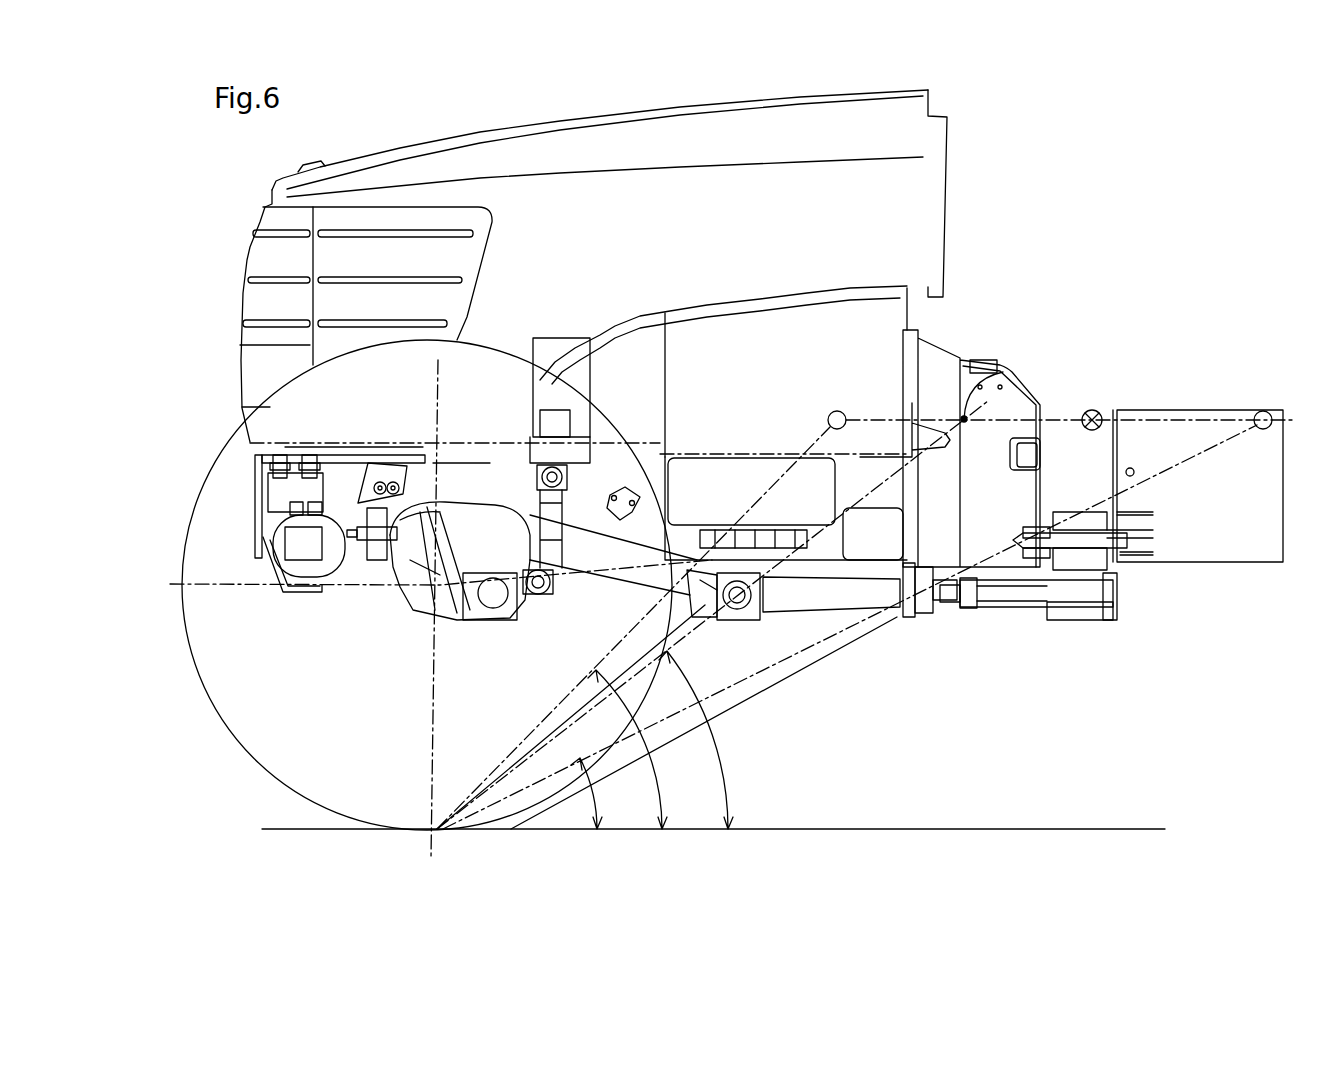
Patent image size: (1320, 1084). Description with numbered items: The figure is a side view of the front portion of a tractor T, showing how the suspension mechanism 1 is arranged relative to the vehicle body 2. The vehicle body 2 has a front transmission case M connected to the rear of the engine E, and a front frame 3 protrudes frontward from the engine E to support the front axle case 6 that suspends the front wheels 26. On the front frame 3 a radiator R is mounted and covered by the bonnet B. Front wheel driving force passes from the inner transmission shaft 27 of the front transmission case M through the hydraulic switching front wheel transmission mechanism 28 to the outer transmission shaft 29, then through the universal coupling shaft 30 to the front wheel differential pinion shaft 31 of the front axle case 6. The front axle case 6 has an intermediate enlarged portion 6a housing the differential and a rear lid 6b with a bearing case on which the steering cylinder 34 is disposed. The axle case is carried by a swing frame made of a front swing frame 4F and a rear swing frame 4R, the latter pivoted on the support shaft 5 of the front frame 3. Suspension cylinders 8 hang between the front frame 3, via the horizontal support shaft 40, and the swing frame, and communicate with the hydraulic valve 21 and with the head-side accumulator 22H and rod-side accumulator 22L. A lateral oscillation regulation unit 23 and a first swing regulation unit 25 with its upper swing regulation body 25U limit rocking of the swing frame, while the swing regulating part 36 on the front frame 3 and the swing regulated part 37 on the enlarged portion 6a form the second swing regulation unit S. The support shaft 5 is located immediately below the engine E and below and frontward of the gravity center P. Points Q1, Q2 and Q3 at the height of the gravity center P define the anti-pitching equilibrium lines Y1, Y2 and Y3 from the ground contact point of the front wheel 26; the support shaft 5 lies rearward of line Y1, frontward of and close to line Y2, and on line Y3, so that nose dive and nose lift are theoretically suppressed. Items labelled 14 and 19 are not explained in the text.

The bonnet B is at (448, 148).
The tractor T is at (1067, 259).
The engine E is at (883, 328).
The suspension mechanism 1 is at (514, 434).
The support bracket 14 is at (494, 454).
The suspension cylinder 8 is at (533, 426).
The first swing regulation unit 25 is at (448, 429).
The upper swing regulation body 25U is at (443, 440).
The second swing regulation unit S is at (487, 467).
The radiator R is at (580, 408).
The bracket 19 is at (647, 464).
The horizontal support shaft 40 is at (537, 435).
The front frame 3 is at (660, 457).
The point Q1 is at (842, 404).
The point Q3 is at (1000, 371).
The gravity center P is at (1091, 408).
The front transmission case M is at (1172, 433).
The point Q2 is at (1270, 405).
The front wheel 26 is at (222, 463).
The hydraulic valve 21 is at (293, 488).
The lateral oscillation regulation unit 23 is at (371, 453).
The rod-side accumulator 22L is at (290, 512).
The head-side accumulator 22H is at (313, 553).
The swing regulating part 36 is at (435, 578).
The swing regulated part 37 is at (433, 612).
The front swing frame 4F is at (381, 584).
The rear lid 6b is at (450, 613).
The intermediate enlarged portion 6a is at (430, 633).
The front axle case 6 is at (460, 596).
The steering cylinder 34 is at (497, 600).
The rear swing frame 4R is at (614, 611).
The support shaft 5 is at (750, 612).
The front wheel differential pinion shaft 31 is at (727, 620).
The universal coupling shaft 30 is at (840, 597).
The outer transmission shaft 29 is at (1010, 590).
The front wheel transmission mechanism 28 is at (1080, 631).
The inner transmission shaft 27 is at (1150, 550).
The vehicle body 2 is at (1146, 587).
The anti-pitching equilibrium line Y1 is at (497, 763).
The anti-pitching equilibrium line Y2 is at (523, 793).
The anti-pitching equilibrium line Y3 is at (563, 728).